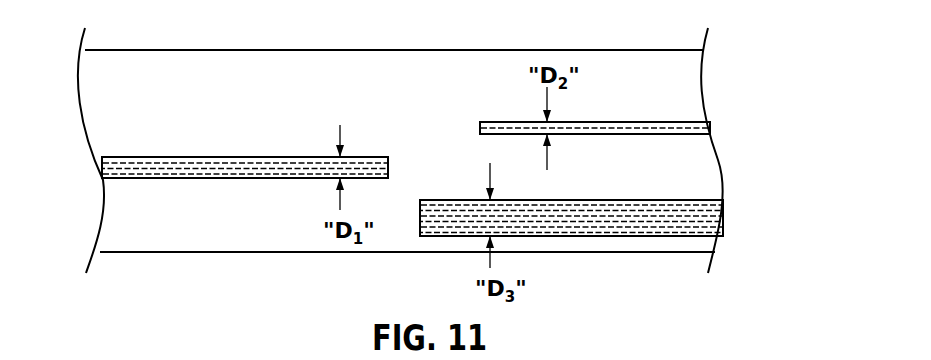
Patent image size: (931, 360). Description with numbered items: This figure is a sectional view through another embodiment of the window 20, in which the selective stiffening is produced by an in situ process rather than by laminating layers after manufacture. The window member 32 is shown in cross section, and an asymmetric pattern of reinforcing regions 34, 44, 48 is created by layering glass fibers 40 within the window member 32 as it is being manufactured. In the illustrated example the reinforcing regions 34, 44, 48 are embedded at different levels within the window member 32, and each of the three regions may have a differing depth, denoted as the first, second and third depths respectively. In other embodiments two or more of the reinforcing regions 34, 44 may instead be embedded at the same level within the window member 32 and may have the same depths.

The window 20 is at (760, 147).
The window member 32 is at (150, 235).
The reinforcing region 34 is at (150, 165).
The glass fibers 40 is at (203, 165).
The reinforcing region 44 is at (653, 128).
The reinforcing region 48 is at (674, 218).